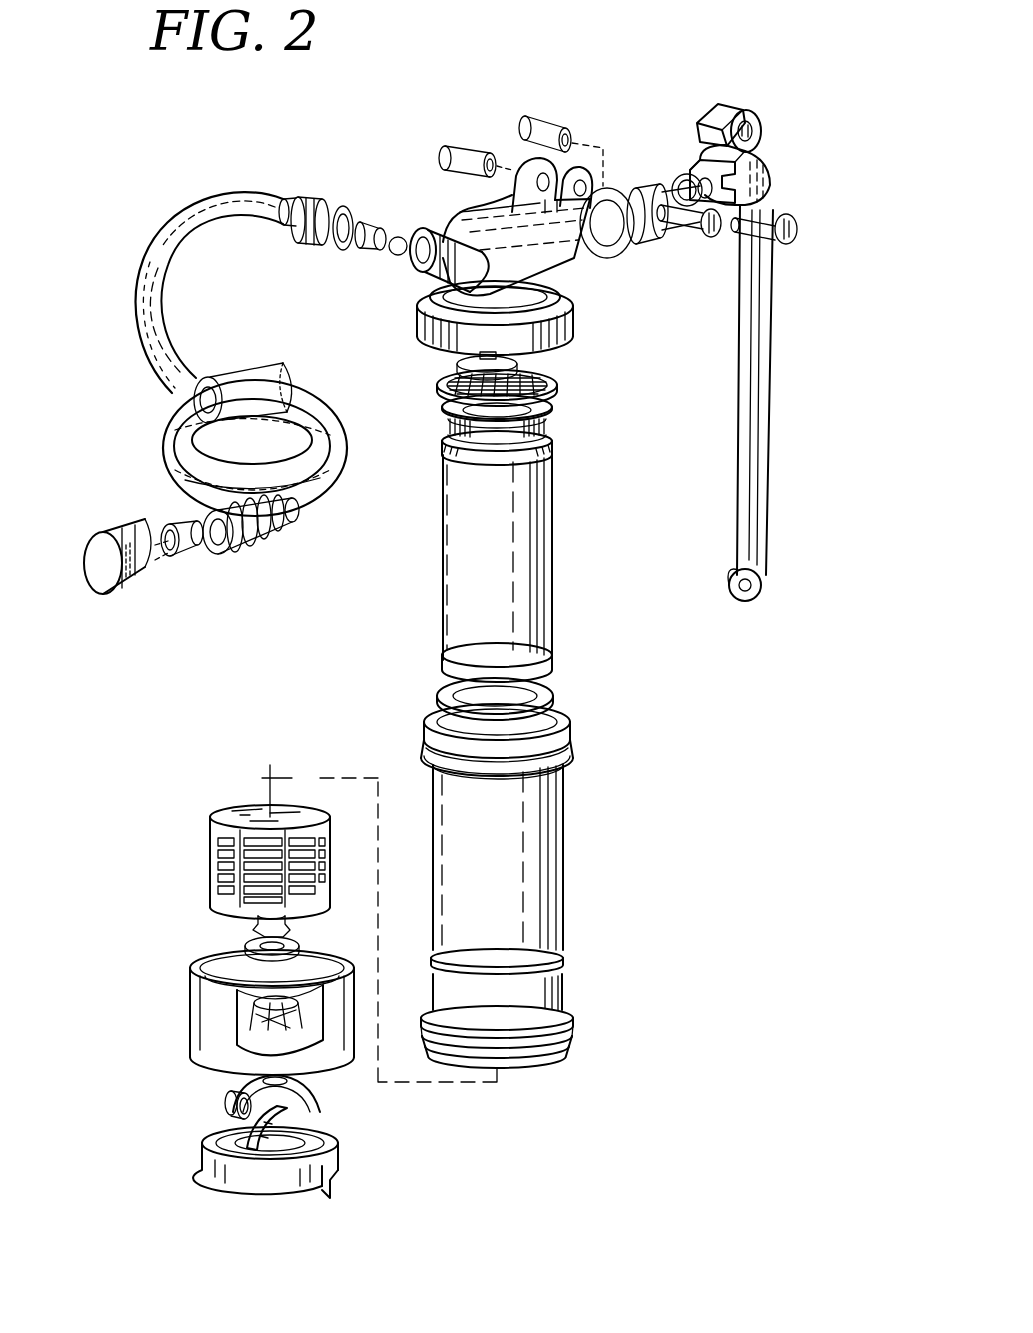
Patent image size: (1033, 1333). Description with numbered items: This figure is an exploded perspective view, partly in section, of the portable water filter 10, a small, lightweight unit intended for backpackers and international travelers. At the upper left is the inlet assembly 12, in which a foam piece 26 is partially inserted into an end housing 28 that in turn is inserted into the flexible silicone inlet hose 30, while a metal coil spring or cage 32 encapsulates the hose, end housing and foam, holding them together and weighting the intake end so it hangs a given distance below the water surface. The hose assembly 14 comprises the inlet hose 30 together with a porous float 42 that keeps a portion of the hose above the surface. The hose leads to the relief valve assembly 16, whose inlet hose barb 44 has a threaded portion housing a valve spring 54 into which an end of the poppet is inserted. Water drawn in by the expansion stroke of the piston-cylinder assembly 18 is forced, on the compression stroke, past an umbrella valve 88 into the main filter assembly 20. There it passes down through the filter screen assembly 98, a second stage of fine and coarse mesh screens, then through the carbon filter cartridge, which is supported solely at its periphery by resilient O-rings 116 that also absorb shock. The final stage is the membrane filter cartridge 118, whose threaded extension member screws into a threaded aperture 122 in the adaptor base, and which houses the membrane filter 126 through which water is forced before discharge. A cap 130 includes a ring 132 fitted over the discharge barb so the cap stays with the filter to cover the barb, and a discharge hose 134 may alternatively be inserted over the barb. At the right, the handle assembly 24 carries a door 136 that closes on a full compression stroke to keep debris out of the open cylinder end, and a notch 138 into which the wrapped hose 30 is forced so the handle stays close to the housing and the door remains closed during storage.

The portable water filter 10 is at (152, 768).
The inlet assembly 12 is at (172, 594).
The hose assembly 14 is at (315, 376).
The relief valve assembly 16 is at (358, 192).
The piston-cylinder assembly 18 is at (634, 162).
The main filter assembly 20 is at (612, 566).
The handle assembly 24 is at (826, 243).
The foam piece 26 is at (95, 568).
The end housing 28 is at (178, 522).
The inlet hose 30 is at (330, 420).
The coil spring or cage 32 is at (245, 550).
The float 42 is at (248, 372).
The inlet hose barb 44 is at (305, 200).
The valve spring 54 is at (385, 236).
The umbrella valve 88 is at (455, 360).
The filter screen assembly 98 is at (560, 386).
The O-rings 116 is at (332, 1048).
The membrane filter cartridge 118 is at (300, 815).
The threaded aperture 122 is at (282, 1000).
The membrane filter 126 is at (222, 862).
The cap 130 is at (228, 1104).
The ring 132 is at (308, 1088).
The discharge hose 134 is at (340, 1175).
The door 136 is at (762, 185).
The notch 138 is at (752, 578).